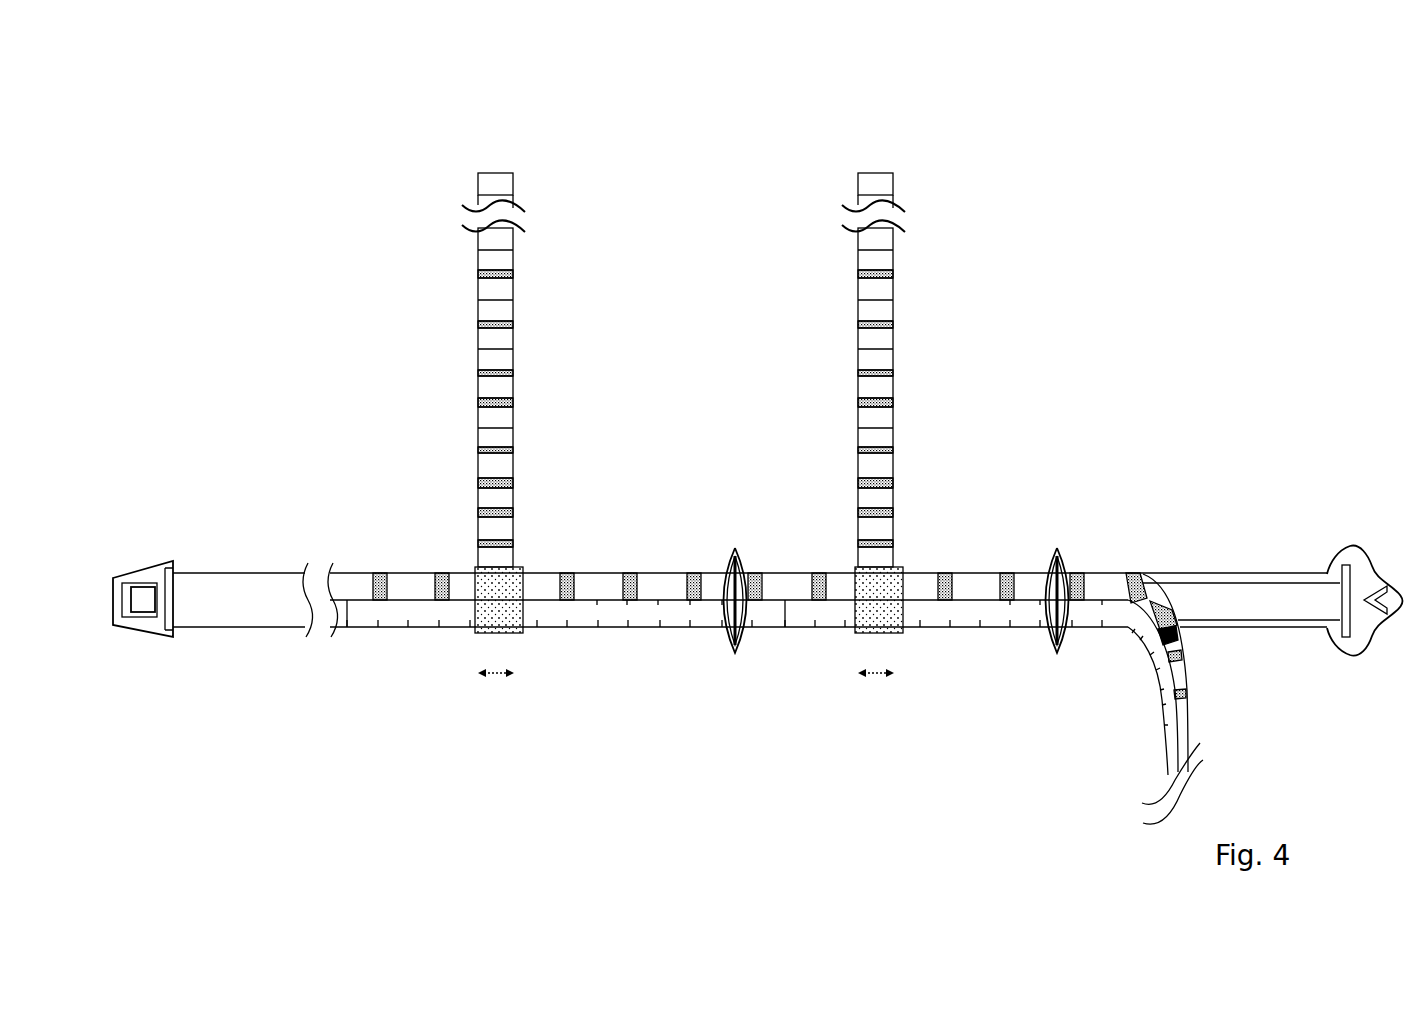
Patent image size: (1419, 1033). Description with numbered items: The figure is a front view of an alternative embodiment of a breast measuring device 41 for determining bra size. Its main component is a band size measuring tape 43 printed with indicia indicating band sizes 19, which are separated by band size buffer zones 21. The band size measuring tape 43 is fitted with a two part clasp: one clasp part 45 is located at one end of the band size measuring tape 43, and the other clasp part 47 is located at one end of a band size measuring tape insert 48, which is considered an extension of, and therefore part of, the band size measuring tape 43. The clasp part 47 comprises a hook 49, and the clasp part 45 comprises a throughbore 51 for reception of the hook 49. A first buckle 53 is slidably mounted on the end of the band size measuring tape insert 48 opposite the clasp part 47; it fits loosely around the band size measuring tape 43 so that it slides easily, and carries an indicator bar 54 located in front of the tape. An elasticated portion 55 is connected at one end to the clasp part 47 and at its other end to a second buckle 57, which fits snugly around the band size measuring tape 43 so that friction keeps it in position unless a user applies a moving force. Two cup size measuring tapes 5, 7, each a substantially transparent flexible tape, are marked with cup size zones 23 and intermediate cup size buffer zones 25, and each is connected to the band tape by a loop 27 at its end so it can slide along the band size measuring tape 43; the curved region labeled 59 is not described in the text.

The cup size measuring tape 5 is at (440, 228).
The cup size measuring tape 7 is at (913, 212).
The band sizes 19 is at (613, 630).
The band size buffer zones 21 is at (633, 630).
The cup size zones 23 is at (478, 332).
The cup size buffer zones 25 is at (478, 373).
The loop 27 is at (478, 633).
The breast measuring device 41 is at (1140, 222).
The band size measuring tape 43 is at (385, 633).
The clasp part 45 is at (140, 626).
The clasp part 47 is at (1378, 551).
The band size measuring tape insert 48 is at (1240, 572).
The hook 49 is at (1393, 650).
The throughbore 51 is at (128, 590).
The first buckle 53 is at (720, 572).
The indicator bar 54 is at (740, 572).
The elasticated portion 55 is at (1250, 600).
The second buckle 57 is at (1083, 566).
The curved distal branch 59 is at (1165, 745).